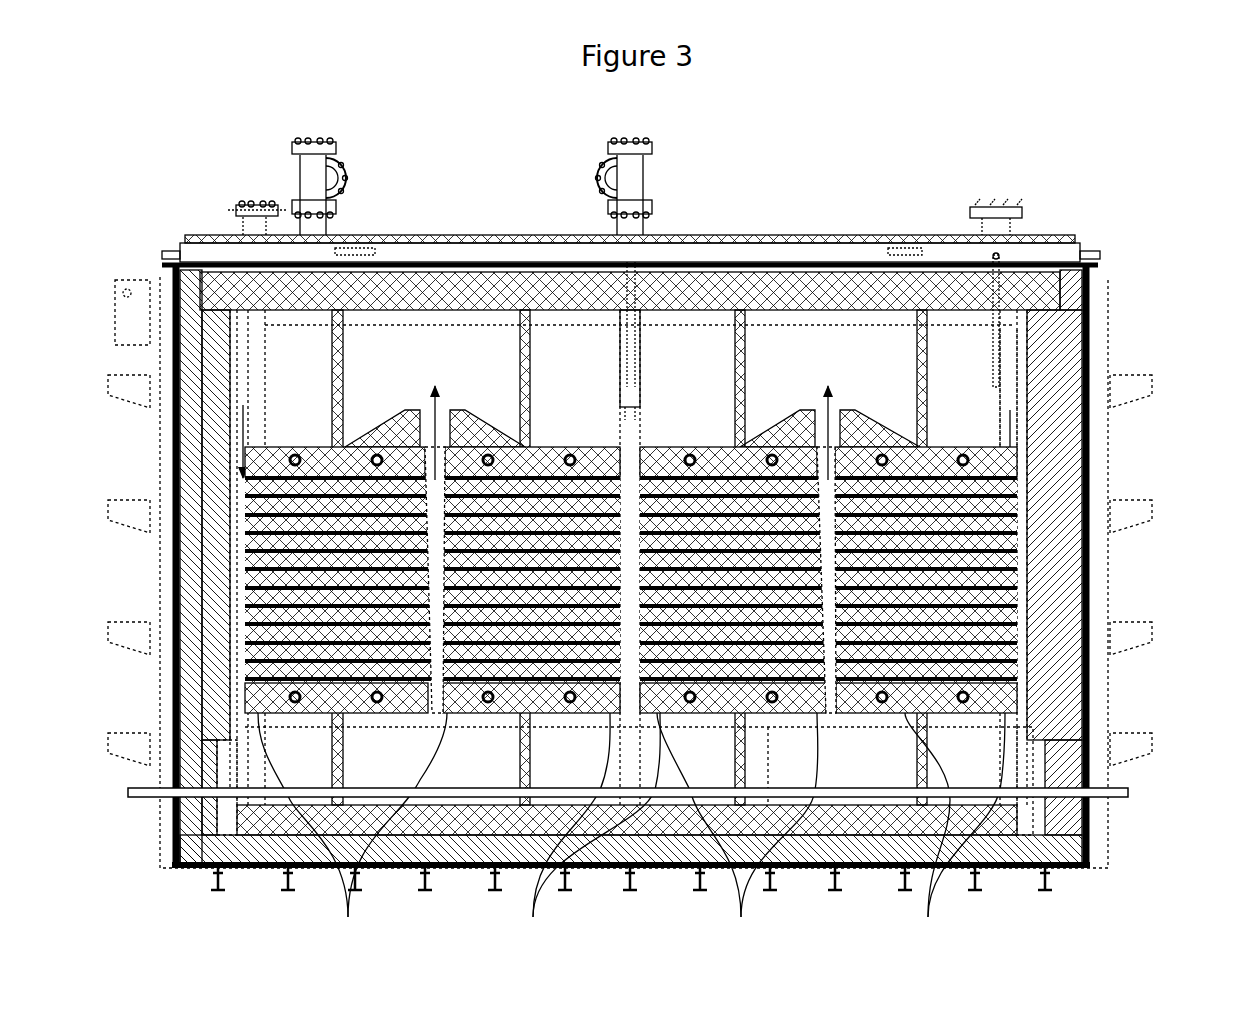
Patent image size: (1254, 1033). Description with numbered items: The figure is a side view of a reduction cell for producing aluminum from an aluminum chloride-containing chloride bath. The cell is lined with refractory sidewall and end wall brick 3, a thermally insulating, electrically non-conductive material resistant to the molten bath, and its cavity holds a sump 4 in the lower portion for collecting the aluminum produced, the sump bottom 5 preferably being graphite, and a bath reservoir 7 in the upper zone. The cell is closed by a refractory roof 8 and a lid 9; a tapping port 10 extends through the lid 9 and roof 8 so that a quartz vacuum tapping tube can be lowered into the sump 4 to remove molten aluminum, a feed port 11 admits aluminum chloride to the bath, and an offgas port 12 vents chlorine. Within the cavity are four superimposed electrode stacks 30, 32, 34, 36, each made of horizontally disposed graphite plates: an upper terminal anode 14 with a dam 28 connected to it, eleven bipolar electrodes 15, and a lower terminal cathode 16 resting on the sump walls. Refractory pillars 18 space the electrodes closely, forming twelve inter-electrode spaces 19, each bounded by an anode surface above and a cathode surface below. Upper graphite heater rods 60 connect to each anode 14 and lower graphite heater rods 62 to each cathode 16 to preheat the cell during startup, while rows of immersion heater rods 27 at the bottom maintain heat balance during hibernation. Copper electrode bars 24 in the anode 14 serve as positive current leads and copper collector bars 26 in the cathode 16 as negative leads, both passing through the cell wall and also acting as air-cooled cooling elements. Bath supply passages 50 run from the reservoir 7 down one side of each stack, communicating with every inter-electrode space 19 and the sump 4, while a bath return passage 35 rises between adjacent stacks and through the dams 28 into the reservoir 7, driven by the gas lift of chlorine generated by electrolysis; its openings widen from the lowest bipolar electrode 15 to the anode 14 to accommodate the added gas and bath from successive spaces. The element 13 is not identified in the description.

The refractory sidewall and end wall brick 3 is at (1072, 484).
The sump 4 is at (826, 783).
The sump bottom 5 is at (993, 836).
The bath reservoir 7 is at (863, 350).
The refractory roof 8 is at (812, 290).
The lid 9 is at (476, 231).
The tapping port 10 is at (1017, 223).
The feed port 11 is at (649, 223).
The offgas port 12 is at (333, 224).
The small nozzle 13 is at (234, 221).
The upper terminal anode 14 is at (934, 363).
The bipolar electrodes 15 is at (1001, 615).
The lower terminal cathode 16 is at (1004, 692).
The refractory pillars 18 is at (1021, 570).
The inter-electrode spaces 19 is at (1020, 643).
The copper electrode bars 24 is at (980, 458).
The copper collector bars 26 is at (934, 758).
The immersion heater rods 27 is at (1094, 854).
The dam 28 is at (865, 403).
The electrode stack 30 is at (348, 917).
The electrode stack 32 is at (533, 917).
The electrode stack 34 is at (741, 917).
The bath return passage 35 is at (631, 549).
The electrode stack 36 is at (928, 917).
The bath supply passage 50 is at (630, 430).
The upper graphite heater rods 60 is at (1012, 352).
The lower graphite heater rods 62 is at (1059, 799).